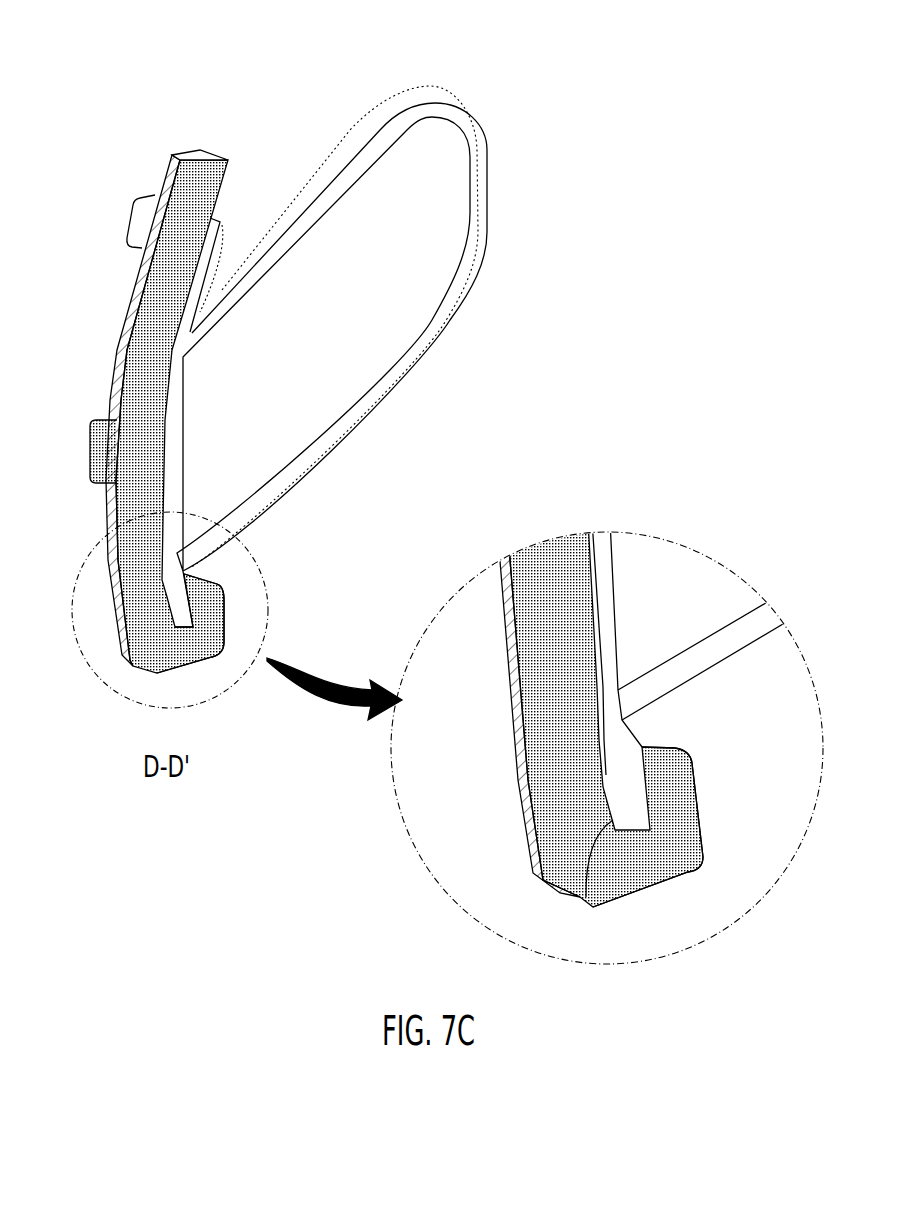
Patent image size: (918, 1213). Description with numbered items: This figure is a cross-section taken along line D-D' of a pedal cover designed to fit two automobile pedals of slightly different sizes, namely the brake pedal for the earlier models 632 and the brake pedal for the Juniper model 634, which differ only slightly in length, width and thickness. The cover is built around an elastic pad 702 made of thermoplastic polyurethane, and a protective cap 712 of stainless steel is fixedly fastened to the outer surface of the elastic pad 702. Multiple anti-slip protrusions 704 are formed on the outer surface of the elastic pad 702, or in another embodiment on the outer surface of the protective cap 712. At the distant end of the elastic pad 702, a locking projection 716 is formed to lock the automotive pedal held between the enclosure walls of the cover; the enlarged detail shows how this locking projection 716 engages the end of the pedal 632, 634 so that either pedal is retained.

The elastic pad 702 is at (147, 342).
The anti-slip protrusions 704 is at (130, 221).
The protective cap 712 is at (172, 153).
The brake pedal for Model 3 and Model Y 632 is at (412, 88).
The brake pedal for Model Y Juniper 634 is at (489, 156).
The locking projection 716 is at (680, 780).